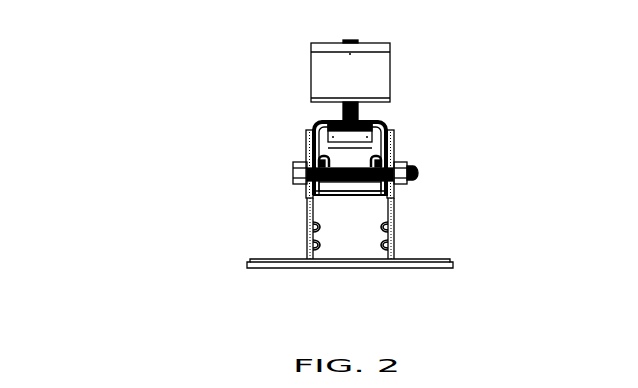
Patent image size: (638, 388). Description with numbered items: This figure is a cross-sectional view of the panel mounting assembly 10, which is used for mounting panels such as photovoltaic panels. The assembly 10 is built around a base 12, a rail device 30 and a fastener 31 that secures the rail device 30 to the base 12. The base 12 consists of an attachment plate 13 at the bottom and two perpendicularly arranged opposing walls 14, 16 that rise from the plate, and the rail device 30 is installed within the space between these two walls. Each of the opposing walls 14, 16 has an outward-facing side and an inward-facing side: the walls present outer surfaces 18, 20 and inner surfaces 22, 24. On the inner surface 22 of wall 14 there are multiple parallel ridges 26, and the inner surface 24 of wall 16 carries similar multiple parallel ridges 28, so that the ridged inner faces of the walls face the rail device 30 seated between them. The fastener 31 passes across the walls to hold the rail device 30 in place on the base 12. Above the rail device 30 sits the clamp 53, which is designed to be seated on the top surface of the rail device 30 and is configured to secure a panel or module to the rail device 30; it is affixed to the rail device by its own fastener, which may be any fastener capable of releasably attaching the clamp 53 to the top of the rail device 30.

The assembly 10 is at (110, 95).
The base 12 is at (298, 200).
The attachment plate 13 is at (248, 262).
The opposing wall 14 is at (310, 222).
The opposing wall 16 is at (396, 213).
The outer surface 18 is at (302, 146).
The outer surface 20 is at (396, 148).
The inner surface 22 is at (310, 229).
The inner surface 24 is at (396, 233).
The parallel ridges 26 is at (310, 247).
The parallel ridges 28 is at (394, 248).
The rail device 30 is at (352, 158).
The fastener 31 is at (418, 176).
The clamp 53 is at (304, 70).